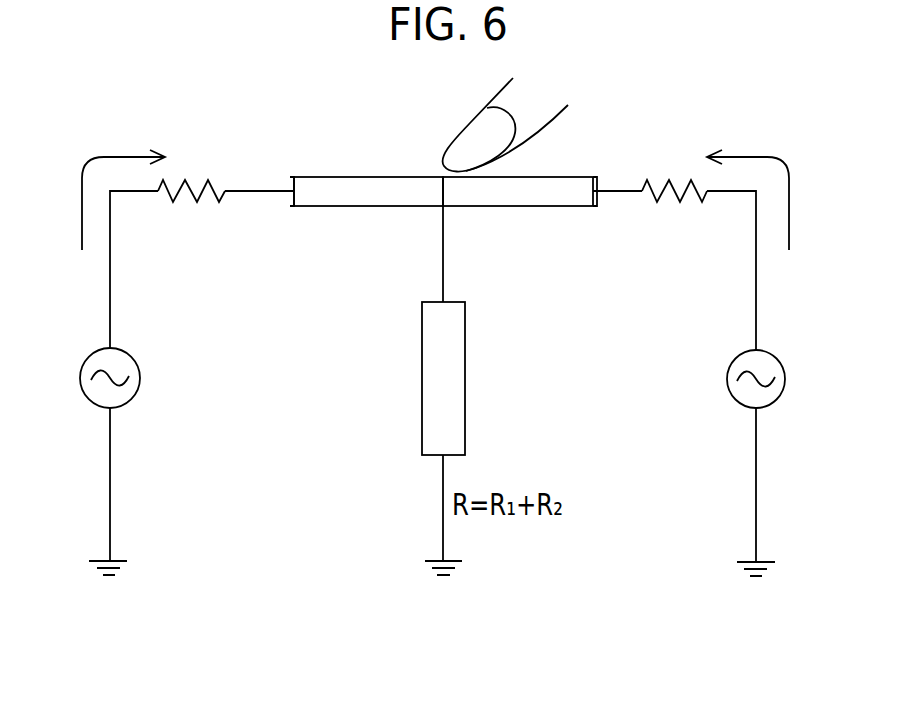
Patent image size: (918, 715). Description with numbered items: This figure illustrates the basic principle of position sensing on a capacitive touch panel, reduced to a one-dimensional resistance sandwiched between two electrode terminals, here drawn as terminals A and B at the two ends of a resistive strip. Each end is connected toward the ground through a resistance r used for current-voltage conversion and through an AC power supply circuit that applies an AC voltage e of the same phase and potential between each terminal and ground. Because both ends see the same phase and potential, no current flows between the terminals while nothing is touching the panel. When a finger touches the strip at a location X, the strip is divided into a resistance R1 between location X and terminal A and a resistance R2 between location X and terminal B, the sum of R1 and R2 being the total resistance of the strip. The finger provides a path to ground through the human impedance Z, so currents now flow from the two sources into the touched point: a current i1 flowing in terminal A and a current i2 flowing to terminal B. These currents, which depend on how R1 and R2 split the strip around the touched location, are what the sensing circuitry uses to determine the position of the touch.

The location touched by the finger X is at (428, 171).
The end terminal A of resistive strip A is at (283, 177).
The end terminal B of resistive strip B is at (605, 178).
The resistance between location X and electrode terminal 14a R1 is at (368, 212).
The resistance between location X and electrode terminal 14b R2 is at (518, 212).
The human impedance Z is at (443, 378).
The resistance for current-voltage conversion r is at (432, 209).
The AC voltage e is at (440, 374).
The current flowing in electrode terminal 14a i1 is at (117, 187).
The current flowing to electrode terminal 14b i2 is at (753, 187).